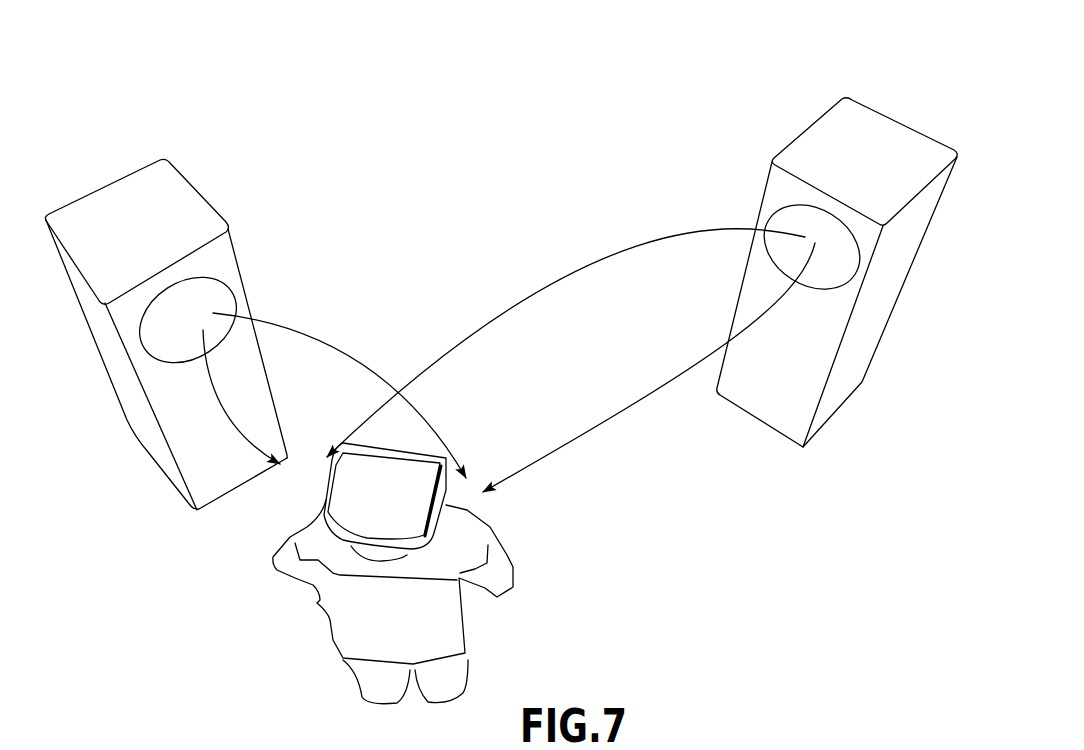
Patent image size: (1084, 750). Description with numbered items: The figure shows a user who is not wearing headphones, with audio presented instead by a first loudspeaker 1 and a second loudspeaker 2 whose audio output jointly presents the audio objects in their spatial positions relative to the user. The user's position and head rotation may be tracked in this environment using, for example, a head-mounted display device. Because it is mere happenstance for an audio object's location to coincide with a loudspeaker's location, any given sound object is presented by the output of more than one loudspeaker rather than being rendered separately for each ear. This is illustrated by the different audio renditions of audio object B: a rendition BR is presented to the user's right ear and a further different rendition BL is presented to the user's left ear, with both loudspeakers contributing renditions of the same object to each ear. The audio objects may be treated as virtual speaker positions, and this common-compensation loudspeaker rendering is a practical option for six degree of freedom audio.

The 1st loudspeaker 1 is at (166, 310).
The 2nd loudspeaker 2 is at (774, 259).
The audio rendition of audio object B to the left ear BL is at (543, 288).
The audio rendition of audio object B to the right ear BR is at (643, 420).